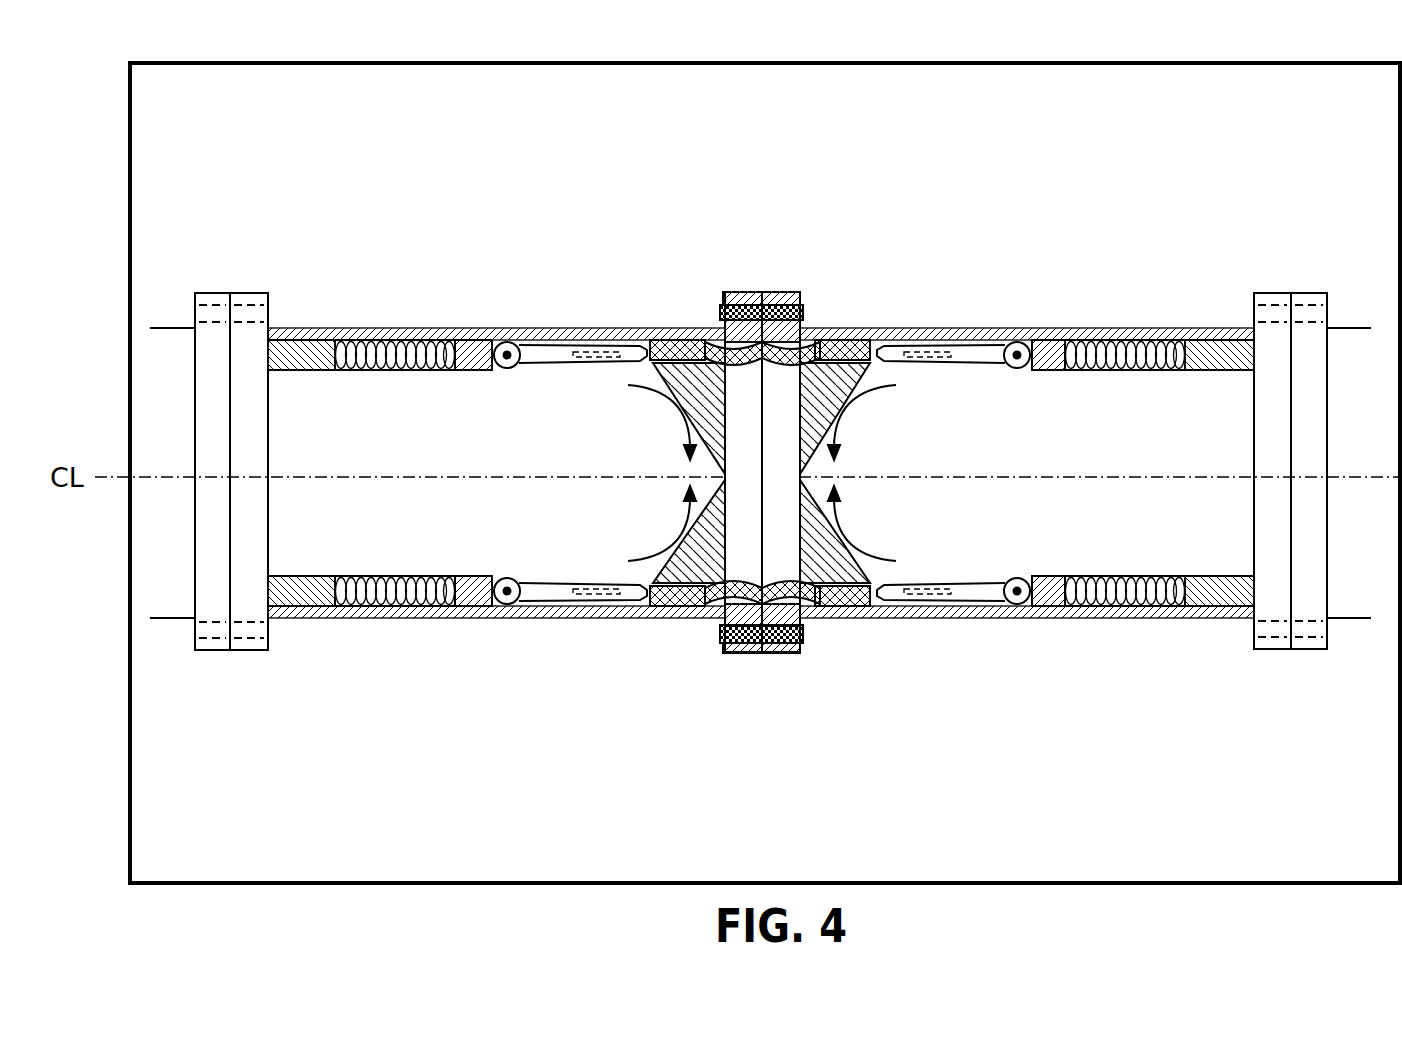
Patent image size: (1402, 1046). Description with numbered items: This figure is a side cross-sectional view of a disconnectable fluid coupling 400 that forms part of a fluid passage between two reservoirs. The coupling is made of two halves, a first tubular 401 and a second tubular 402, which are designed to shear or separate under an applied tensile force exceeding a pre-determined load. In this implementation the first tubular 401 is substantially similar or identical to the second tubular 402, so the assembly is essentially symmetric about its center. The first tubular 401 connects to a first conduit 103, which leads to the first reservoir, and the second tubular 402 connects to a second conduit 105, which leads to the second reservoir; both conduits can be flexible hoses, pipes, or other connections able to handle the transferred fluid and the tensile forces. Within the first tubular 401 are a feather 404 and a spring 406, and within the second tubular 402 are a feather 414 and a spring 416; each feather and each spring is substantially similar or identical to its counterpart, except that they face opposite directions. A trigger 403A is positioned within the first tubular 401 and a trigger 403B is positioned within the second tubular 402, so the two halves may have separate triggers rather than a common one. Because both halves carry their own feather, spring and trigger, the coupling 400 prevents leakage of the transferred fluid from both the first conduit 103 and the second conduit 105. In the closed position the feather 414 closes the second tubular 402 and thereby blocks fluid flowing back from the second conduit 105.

The fluid coupling 400 is at (103, 173).
The first tubular 401 is at (1030, 303).
The second tubular 402 is at (562, 298).
The trigger 403A is at (832, 610).
The trigger 403B is at (688, 610).
The feather 404 is at (953, 598).
The spring 406 is at (1155, 610).
The feather 414 is at (556, 592).
The spring 416 is at (395, 604).
The first conduit 103 is at (1351, 619).
The second conduit 105 is at (167, 620).